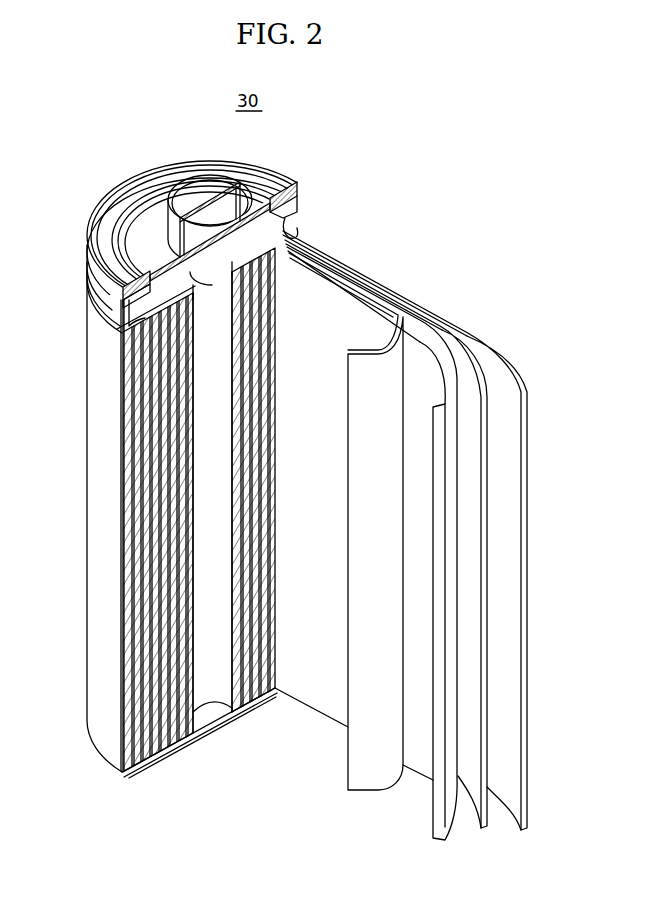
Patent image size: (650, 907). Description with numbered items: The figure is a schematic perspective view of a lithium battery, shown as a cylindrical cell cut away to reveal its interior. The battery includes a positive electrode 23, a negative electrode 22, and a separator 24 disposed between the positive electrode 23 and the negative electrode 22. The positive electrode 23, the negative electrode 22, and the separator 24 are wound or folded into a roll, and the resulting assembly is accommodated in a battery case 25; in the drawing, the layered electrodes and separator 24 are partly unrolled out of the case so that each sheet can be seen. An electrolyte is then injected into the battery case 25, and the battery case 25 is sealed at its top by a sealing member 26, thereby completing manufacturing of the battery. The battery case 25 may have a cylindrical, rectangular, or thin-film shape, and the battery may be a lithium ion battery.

The negative electrode 22 is at (518, 368).
The positive electrode 23 is at (445, 365).
The separator 24 is at (378, 355).
The battery case 25 is at (87, 502).
The sealing member 26 is at (187, 195).